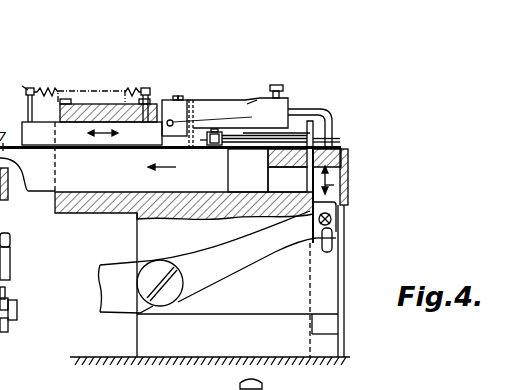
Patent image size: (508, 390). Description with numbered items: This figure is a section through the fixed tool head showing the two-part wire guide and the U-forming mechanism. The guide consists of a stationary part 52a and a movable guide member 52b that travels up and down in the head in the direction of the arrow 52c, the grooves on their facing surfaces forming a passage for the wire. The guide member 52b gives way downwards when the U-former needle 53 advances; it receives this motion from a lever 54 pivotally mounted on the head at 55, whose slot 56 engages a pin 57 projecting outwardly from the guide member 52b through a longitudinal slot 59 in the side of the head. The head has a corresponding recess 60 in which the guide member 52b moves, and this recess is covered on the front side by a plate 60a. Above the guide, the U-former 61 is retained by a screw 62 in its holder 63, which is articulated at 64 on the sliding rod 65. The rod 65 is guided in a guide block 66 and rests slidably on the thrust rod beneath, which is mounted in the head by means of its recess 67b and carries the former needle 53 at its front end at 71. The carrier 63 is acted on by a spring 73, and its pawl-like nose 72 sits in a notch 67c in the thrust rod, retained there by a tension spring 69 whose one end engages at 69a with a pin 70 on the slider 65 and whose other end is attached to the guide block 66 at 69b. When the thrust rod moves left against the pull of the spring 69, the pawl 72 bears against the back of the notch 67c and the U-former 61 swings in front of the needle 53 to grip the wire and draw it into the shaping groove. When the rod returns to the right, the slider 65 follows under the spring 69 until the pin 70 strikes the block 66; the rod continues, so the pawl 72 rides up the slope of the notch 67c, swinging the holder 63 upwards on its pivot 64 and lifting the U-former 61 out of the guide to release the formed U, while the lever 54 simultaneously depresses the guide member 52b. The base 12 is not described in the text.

The base 12 is at (233, 358).
The stationary part of the guide 52a is at (287, 170).
The movable guide member 52b is at (343, 167).
The arrow 52c is at (346, 188).
The U-former needle 53 is at (281, 152).
The lever 54 is at (262, 254).
The pivot of the lever 55 is at (178, 279).
The slot of the lever 56 is at (333, 215).
The pin 57 is at (337, 233).
The longitudinal slot 59 is at (337, 249).
The recess 60 is at (326, 348).
The plate 60a is at (343, 292).
The U-former 61 is at (322, 128).
The screw 62 is at (284, 76).
The holder of the U-former 63 is at (251, 116).
The articulation pivot 64 is at (207, 123).
The sliding rod 65 is at (92, 133).
The guide block 66 is at (88, 104).
The recess of the thrust rod 67b is at (248, 170).
The notch 67c is at (208, 146).
The tension spring 69 is at (50, 85).
The spring attachment to pin 69a is at (14, 87).
The spring attachment to guide block 69b is at (150, 92).
The pin on the slider 70 is at (27, 103).
The needle mounting 71 is at (214, 131).
The pawl-like nose 72 is at (197, 141).
The spring 73 is at (230, 106).